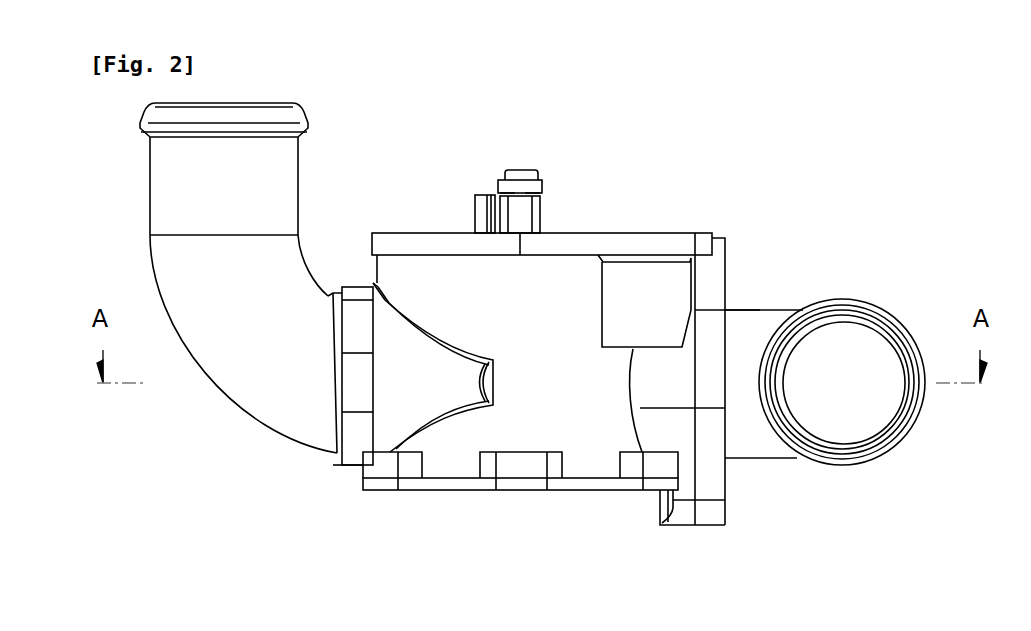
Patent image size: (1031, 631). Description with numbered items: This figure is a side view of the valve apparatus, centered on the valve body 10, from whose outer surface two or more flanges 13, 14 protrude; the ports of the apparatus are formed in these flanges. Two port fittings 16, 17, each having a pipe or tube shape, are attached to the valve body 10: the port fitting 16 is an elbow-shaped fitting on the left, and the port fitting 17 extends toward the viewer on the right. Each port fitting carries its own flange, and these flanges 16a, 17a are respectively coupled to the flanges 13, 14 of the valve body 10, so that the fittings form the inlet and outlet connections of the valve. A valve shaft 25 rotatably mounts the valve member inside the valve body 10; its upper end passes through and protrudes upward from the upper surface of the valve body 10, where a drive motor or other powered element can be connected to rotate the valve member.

The valve body 10 is at (663, 242).
The flange 13 is at (392, 328).
The flange 14 is at (665, 438).
The port fitting 16 is at (221, 376).
The flange 16a is at (347, 457).
The port fitting 17 is at (863, 467).
The flange 17a is at (715, 487).
The valve shaft 25 is at (527, 215).